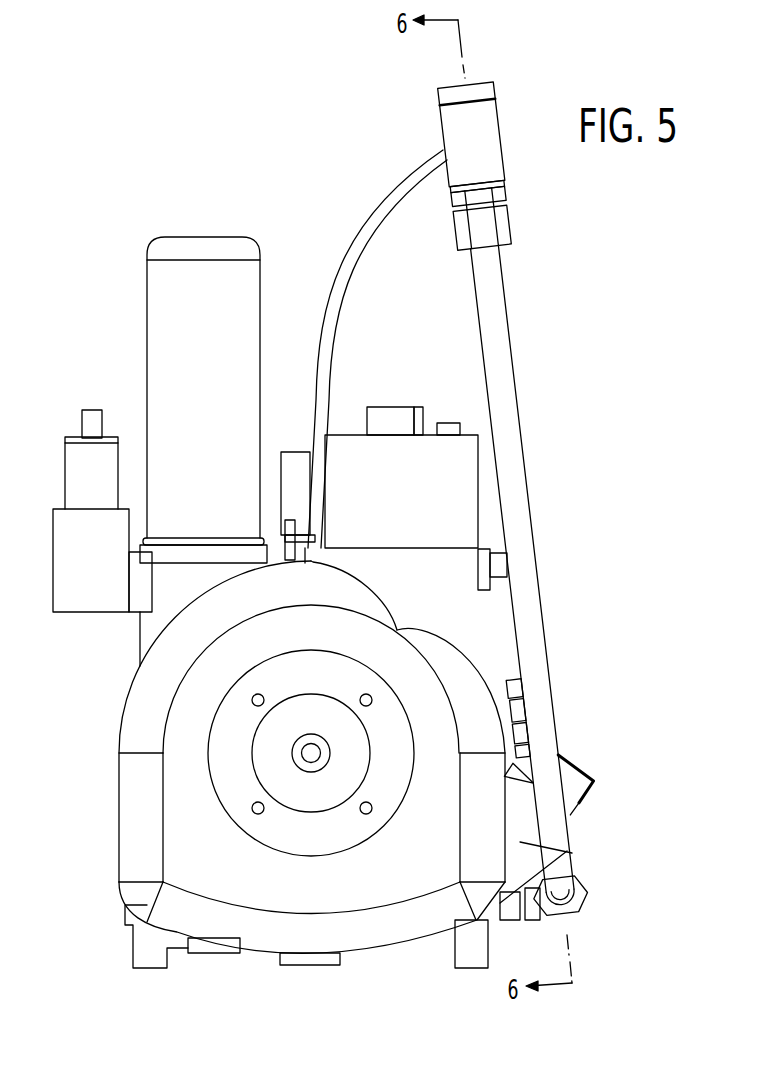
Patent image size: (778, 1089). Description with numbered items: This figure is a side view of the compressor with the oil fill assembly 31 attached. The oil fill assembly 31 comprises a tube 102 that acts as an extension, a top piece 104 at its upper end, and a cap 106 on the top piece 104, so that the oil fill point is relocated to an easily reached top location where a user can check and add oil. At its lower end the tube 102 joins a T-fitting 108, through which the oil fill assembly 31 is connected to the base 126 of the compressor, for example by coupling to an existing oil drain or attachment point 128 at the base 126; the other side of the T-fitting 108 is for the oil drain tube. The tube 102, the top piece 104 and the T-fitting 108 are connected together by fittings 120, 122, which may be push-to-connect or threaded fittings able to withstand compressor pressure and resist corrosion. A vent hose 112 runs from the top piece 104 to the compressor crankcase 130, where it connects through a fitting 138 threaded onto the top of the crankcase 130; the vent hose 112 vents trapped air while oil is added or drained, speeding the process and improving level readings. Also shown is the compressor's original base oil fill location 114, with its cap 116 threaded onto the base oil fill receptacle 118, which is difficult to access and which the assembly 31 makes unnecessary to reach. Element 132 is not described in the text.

The oil fill assembly 31 is at (579, 358).
The tube 102 is at (534, 522).
The top piece 104 is at (503, 140).
The cap 106 is at (478, 82).
The T-fitting 108 is at (528, 923).
The vent hose 112 is at (352, 230).
The base oil fill location 114 is at (584, 746).
The cap 116 is at (585, 811).
The base oil fill receptacle 118 is at (522, 843).
The fitting 120 is at (513, 220).
The fitting 122 is at (587, 916).
The base 126 is at (352, 946).
The oil drain 128 is at (497, 908).
The crankcase 130 is at (360, 588).
The fitting stack 132 is at (517, 673).
The fitting 138 is at (285, 555).